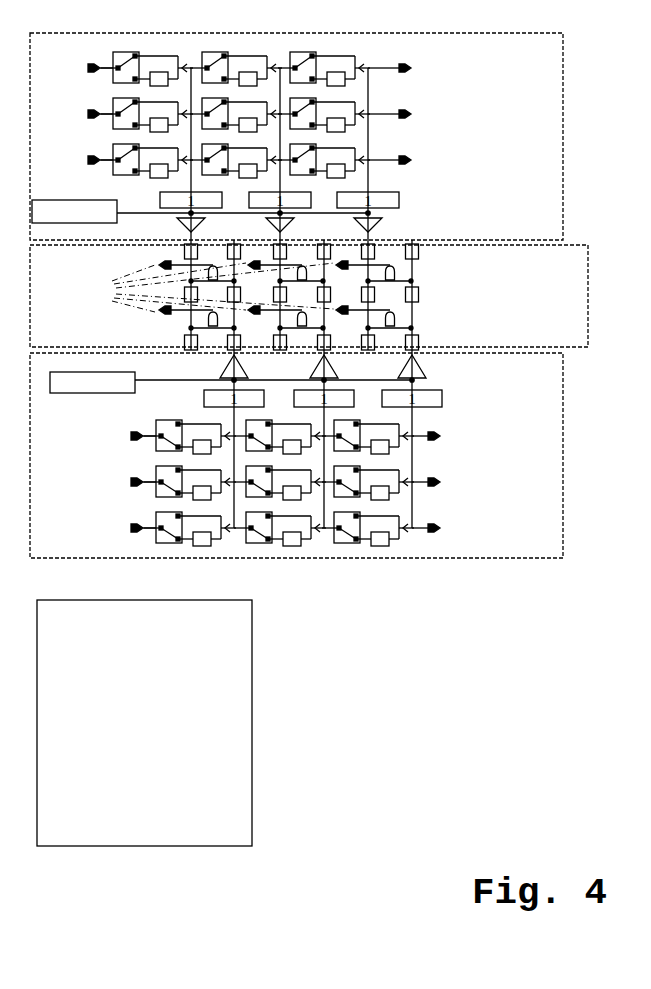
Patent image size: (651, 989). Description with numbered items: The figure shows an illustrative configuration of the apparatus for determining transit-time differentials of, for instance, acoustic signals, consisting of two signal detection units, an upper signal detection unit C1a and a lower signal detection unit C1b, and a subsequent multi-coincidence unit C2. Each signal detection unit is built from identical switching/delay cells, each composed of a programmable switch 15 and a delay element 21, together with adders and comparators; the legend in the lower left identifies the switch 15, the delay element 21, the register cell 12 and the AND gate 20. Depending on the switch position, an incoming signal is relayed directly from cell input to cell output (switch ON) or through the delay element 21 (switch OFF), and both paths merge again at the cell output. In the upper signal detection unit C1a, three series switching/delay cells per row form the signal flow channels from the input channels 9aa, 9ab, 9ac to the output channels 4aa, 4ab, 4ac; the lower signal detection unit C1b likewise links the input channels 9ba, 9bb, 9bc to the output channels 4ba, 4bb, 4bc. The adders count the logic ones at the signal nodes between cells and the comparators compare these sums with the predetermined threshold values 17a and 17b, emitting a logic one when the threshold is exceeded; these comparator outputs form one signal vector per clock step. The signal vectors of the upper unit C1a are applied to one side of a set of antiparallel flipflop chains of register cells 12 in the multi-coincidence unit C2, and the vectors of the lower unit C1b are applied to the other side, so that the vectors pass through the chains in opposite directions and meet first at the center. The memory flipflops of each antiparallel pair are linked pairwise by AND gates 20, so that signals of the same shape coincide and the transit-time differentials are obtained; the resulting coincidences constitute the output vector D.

The register cell (flipflop chain) 12 is at (421, 293).
The programmable switch 15 is at (348, 551).
The AND gate 20 is at (400, 320).
The delay element 21 is at (392, 552).
The threshold value 17a is at (201, 212).
The threshold value 17b is at (232, 383).
The input channel 9aa is at (75, 70).
The input channel 9ab is at (75, 115).
The input channel 9ac is at (75, 160).
The input channel 9ba is at (116, 434).
The input channel 9bb is at (116, 479).
The input channel 9bc is at (116, 524).
The output channel 4aa is at (419, 65).
The output channel 4ab is at (419, 109).
The output channel 4ac is at (419, 156).
The output channel 4ba is at (460, 434).
The output channel 4bb is at (461, 479).
The output channel 4bc is at (460, 524).
The upper signal detection unit C1a is at (565, 115).
The lower signal detection unit C1b is at (561, 459).
The multi-coincidence unit C2 is at (587, 288).
The output vector D is at (208, 287).